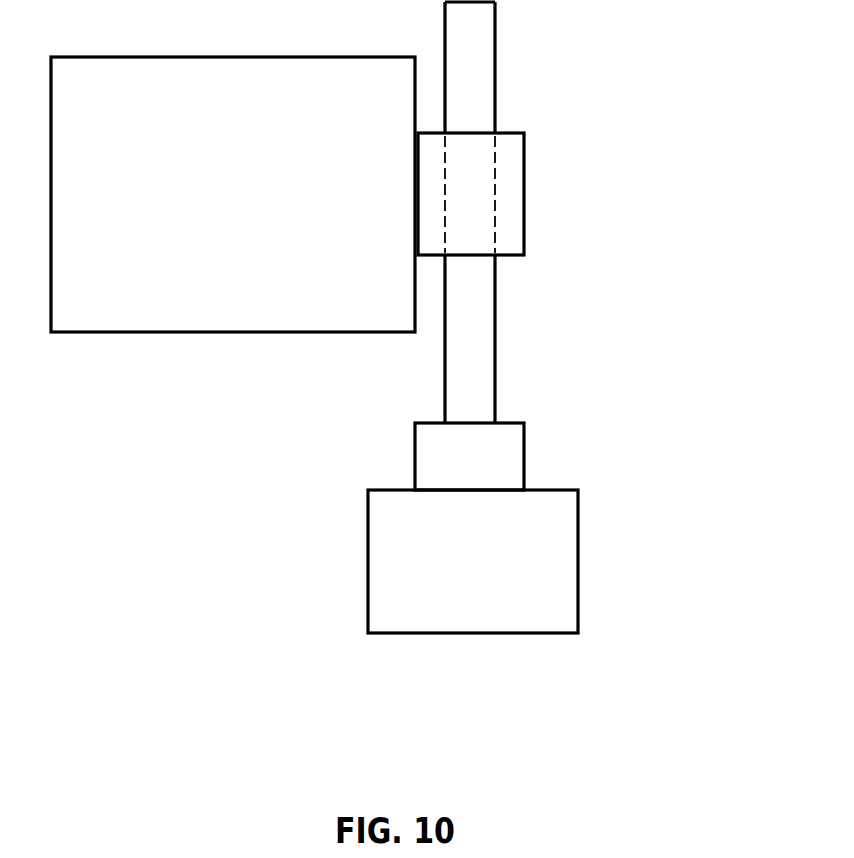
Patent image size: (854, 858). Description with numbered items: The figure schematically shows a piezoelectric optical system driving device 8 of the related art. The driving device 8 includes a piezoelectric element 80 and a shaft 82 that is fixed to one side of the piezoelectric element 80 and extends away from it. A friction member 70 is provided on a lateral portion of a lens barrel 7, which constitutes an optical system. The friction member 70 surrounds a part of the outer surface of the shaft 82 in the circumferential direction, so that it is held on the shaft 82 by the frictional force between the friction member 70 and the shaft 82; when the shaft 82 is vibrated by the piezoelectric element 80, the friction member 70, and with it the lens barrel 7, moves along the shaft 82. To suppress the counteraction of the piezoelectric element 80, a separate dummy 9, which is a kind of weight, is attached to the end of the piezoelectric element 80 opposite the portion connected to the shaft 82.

The lens barrel 7 is at (225, 292).
The friction member 70 is at (525, 182).
The piezoelectric optical system driving device 8 is at (581, 246).
The shaft 82 is at (479, 321).
The piezoelectric element 80 is at (548, 452).
The dummy 9 is at (475, 610).